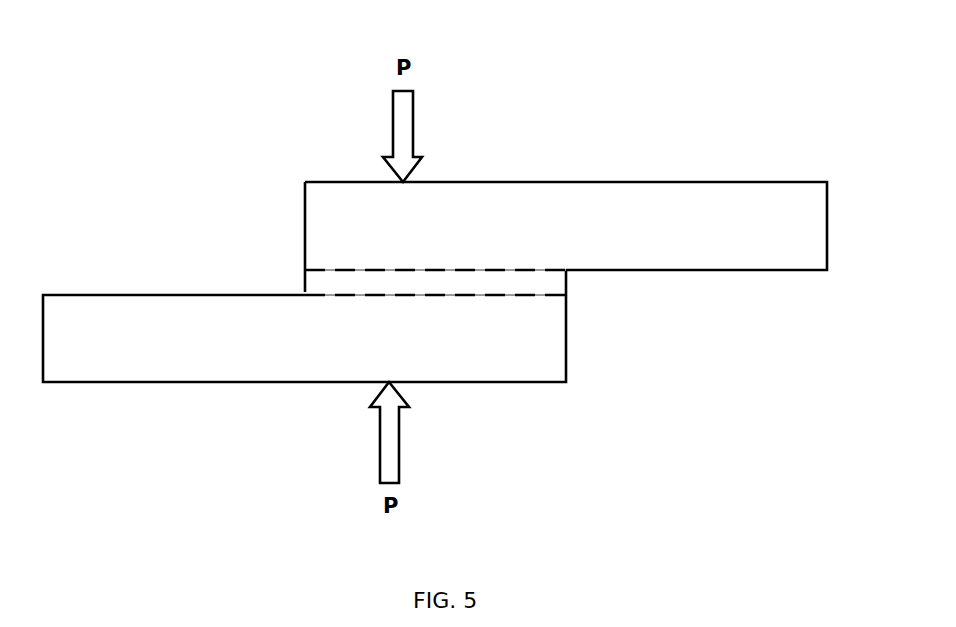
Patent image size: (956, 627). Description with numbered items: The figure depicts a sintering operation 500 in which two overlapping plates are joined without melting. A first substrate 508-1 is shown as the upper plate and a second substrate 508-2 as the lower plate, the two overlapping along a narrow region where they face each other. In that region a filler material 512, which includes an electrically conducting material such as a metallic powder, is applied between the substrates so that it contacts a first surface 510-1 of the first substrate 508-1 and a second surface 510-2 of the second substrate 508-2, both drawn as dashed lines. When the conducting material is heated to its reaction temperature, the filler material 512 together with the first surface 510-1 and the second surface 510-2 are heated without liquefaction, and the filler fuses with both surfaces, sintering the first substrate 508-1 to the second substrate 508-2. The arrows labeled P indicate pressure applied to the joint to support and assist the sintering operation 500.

The sintering operation 500 is at (188, 142).
The first substrate 508-1 is at (566, 237).
The second substrate 508-2 is at (304, 338).
The first surface 510-1 is at (403, 269).
The second surface 510-2 is at (490, 295).
The filler material 512 is at (566, 282).